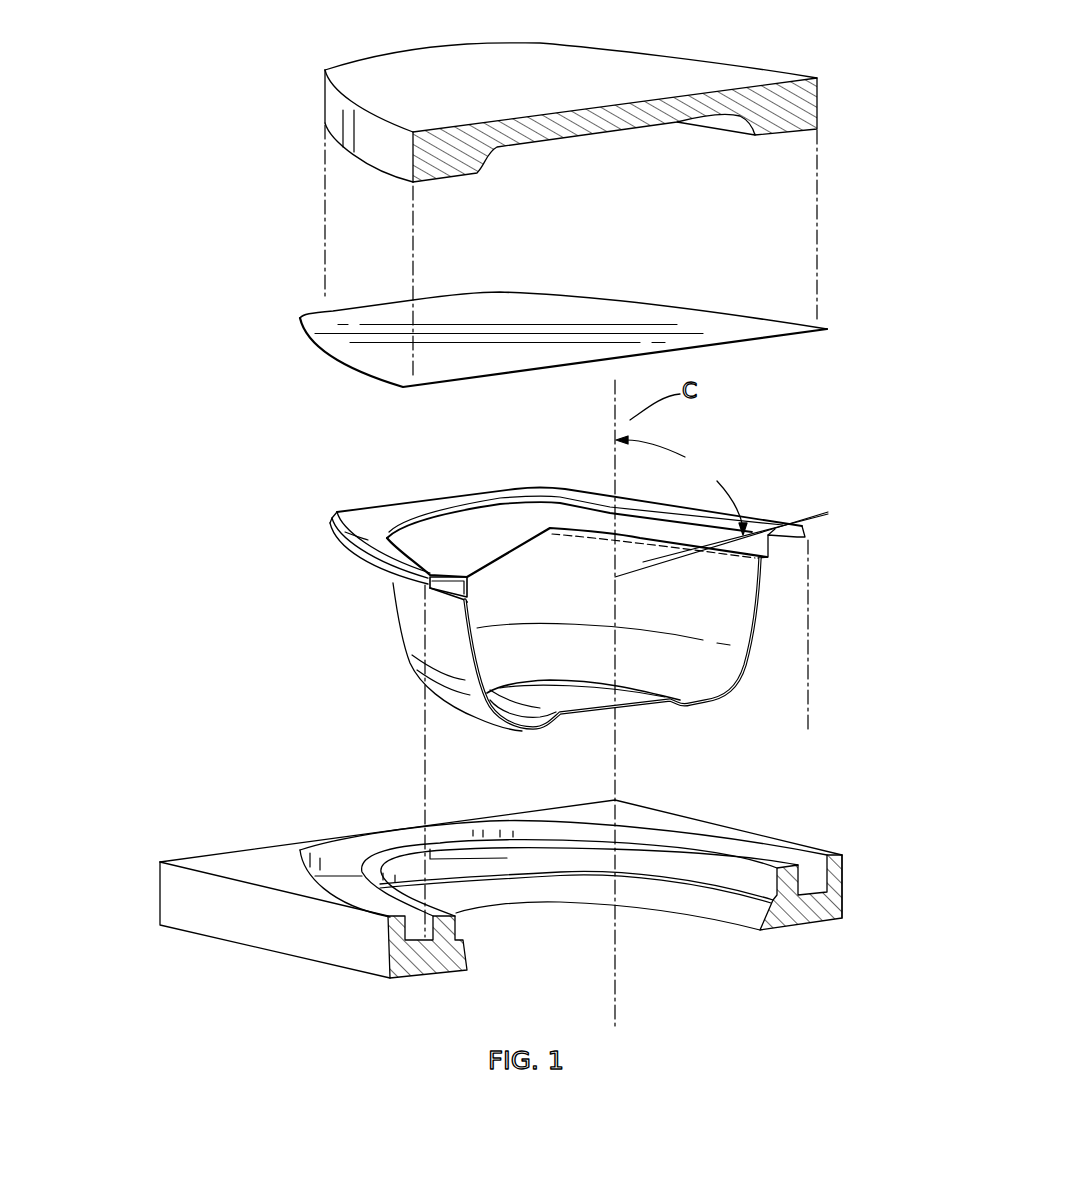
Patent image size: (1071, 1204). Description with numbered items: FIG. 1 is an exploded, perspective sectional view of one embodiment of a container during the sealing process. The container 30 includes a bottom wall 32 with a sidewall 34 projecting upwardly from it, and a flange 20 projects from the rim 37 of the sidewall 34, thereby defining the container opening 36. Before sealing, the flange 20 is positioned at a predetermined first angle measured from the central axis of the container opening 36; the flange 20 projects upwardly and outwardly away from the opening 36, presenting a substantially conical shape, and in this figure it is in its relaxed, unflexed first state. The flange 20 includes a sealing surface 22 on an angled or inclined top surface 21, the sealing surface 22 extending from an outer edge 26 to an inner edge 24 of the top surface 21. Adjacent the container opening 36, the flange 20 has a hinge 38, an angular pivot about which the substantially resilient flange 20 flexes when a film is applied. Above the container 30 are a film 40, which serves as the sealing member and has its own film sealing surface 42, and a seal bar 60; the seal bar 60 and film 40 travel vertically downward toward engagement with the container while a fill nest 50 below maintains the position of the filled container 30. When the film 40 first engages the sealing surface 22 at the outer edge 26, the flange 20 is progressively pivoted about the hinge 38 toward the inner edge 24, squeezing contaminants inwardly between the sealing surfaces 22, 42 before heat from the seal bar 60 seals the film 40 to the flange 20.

The flange 20 is at (572, 527).
The top surface 21 is at (531, 524).
The sealing surface 22 is at (337, 545).
The inner edge 24 is at (427, 550).
The outer edge 26 is at (368, 570).
The container 30 is at (577, 587).
The bottom wall 32 is at (622, 697).
The sidewall 34 is at (733, 620).
The container opening 36 is at (485, 538).
The rim 37 is at (480, 564).
The hinge 38 is at (487, 586).
The film 40 is at (618, 356).
The film sealing surface 42 is at (755, 340).
The fill nest 50 is at (132, 907).
The seal bar 60 is at (310, 90).